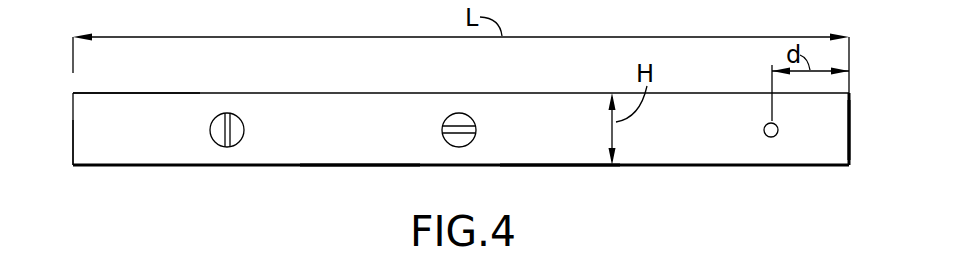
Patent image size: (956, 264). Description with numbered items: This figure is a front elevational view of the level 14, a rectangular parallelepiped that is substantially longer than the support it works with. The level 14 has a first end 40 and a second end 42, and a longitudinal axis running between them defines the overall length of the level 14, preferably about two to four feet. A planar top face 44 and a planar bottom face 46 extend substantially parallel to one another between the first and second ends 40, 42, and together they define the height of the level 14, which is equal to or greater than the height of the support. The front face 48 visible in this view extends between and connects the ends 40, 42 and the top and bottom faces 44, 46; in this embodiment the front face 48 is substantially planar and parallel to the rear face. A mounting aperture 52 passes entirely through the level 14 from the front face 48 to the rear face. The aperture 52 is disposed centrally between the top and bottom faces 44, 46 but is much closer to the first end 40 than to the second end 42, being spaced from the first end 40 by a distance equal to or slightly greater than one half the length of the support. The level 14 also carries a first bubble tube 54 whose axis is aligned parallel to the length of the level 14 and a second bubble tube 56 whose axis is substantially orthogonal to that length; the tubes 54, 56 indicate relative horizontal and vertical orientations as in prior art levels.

The level 14 is at (800, 173).
The first end 40 is at (72, 148).
The second end 42 is at (852, 129).
The top face 44 is at (88, 92).
The bottom face 46 is at (385, 168).
The front face 48 is at (544, 158).
The mounting aperture 52 is at (767, 134).
The first bubble tube 54 is at (462, 122).
The second bubble tube 56 is at (234, 136).